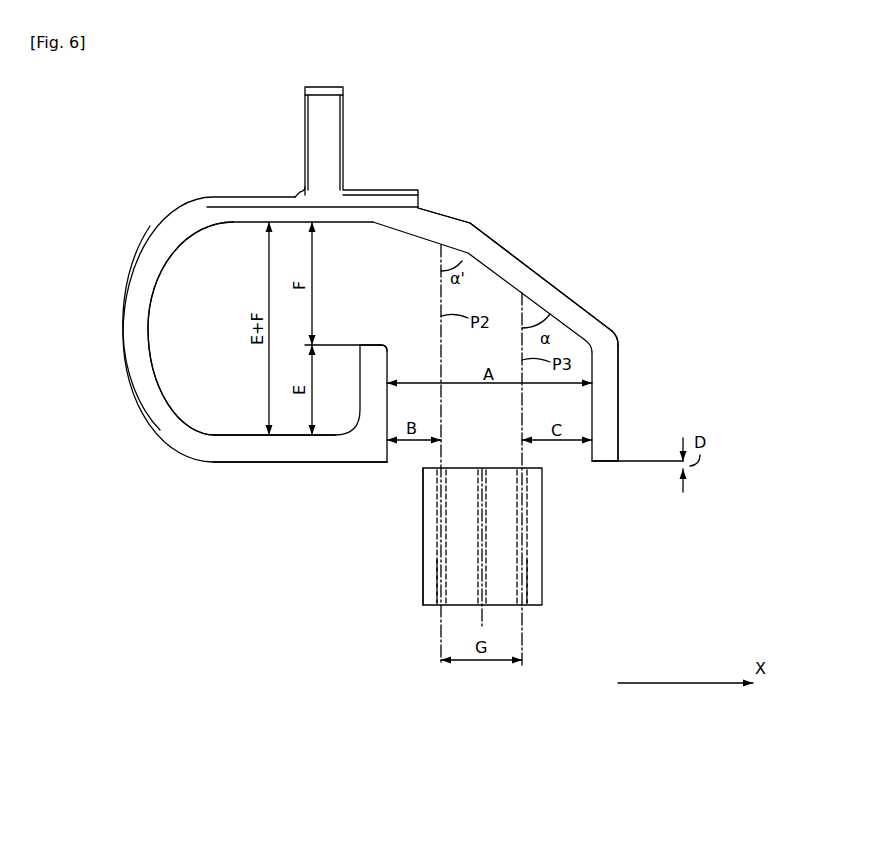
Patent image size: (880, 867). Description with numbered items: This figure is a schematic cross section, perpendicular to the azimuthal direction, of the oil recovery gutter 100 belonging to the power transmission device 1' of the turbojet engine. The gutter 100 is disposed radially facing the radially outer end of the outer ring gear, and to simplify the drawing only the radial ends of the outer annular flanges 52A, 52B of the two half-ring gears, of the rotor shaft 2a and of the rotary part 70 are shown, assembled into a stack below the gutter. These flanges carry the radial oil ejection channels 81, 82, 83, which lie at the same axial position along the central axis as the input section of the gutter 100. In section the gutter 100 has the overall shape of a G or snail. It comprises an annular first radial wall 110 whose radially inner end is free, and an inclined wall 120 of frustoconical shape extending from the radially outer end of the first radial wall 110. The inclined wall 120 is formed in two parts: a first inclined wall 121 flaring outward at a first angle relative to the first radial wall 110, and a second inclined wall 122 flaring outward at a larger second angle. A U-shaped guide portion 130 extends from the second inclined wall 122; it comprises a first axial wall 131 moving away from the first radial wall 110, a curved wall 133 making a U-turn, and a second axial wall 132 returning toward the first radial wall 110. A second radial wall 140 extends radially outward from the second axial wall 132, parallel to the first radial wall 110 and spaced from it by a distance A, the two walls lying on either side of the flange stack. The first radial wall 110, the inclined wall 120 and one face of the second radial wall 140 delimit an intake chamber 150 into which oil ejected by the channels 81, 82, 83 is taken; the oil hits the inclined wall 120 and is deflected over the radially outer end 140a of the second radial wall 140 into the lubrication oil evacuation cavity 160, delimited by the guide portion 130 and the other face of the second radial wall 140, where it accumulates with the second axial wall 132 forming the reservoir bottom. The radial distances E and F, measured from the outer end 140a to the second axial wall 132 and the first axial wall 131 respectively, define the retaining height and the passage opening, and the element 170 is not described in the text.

The power transmission device 1' is at (701, 226).
The gutter 100 is at (595, 185).
The first radial wall 110 is at (608, 386).
The inclined wall 120 is at (513, 210).
The first inclined wall 121 is at (540, 278).
The second inclined wall 122 is at (443, 222).
The guide portion 130 is at (153, 210).
The first axial wall 131 is at (290, 208).
The second axial wall 132 is at (292, 450).
The curved wall 133 is at (137, 333).
The second radial wall 140 is at (377, 372).
The radially outer end of the second radial wall 140a is at (375, 343).
The intake chamber 150 is at (498, 358).
The lubrication oil evacuation cavity 160 is at (224, 339).
The fixing portion 170 is at (332, 142).
The rotor shaft 2a is at (423, 535).
The outer annular flange 52A is at (440, 492).
The outer annular flange 52B is at (522, 492).
The rotary part 70 is at (542, 530).
The radial oil ejection channel 81 is at (482, 522).
The radial oil ejection channel 82 is at (437, 578).
The radial oil ejection channel 83 is at (527, 578).